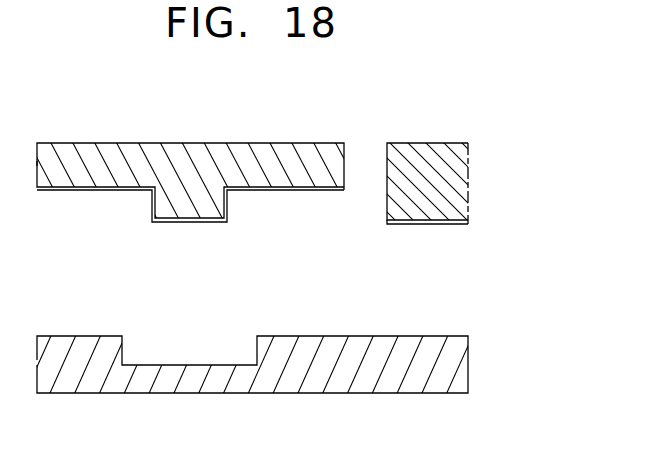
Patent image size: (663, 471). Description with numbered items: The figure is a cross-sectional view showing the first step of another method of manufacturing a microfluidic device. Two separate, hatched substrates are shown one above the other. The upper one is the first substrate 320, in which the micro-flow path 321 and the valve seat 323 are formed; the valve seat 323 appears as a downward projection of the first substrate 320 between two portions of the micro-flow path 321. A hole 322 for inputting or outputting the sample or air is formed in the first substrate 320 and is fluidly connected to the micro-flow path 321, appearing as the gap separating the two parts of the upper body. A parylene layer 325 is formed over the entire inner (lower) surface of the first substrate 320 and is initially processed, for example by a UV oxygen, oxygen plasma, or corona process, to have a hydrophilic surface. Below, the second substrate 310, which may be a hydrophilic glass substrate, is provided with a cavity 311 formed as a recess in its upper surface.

The second substrate 310 is at (468, 376).
The cavity 311 is at (186, 355).
The first substrate 320 is at (468, 178).
The micro-flow path 321 is at (88, 203).
The hole 322 is at (366, 160).
The valve seat 323 is at (164, 206).
The parylene layer 325 is at (447, 224).